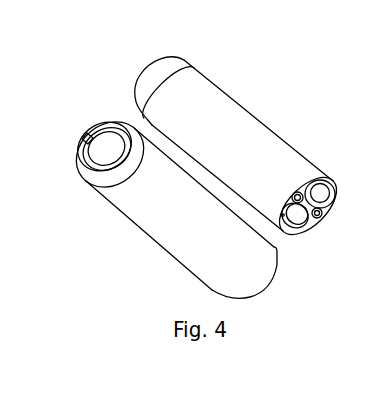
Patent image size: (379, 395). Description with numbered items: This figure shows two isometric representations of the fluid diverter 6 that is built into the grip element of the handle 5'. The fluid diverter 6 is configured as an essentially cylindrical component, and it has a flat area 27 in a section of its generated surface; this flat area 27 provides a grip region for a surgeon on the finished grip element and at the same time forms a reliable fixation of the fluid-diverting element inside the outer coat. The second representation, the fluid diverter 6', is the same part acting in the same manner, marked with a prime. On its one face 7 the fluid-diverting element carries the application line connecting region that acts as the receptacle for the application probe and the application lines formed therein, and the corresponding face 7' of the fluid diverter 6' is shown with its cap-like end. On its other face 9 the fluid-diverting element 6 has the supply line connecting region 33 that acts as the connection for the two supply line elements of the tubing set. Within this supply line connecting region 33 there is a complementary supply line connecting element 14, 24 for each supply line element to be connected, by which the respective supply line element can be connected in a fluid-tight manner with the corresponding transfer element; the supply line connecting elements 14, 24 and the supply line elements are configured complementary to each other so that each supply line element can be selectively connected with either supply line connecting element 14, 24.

The handle 5' is at (259, 304).
The fluid diverter 6 is at (238, 132).
The fluid diverter 6' is at (179, 219).
The face 7 is at (108, 132).
The face 7' is at (158, 68).
The other face 9 is at (311, 236).
The supply line connecting element 14 is at (307, 183).
The supply line connecting element 24 is at (296, 226).
The flat area 27 is at (333, 224).
The supply line connecting region 33 is at (321, 187).